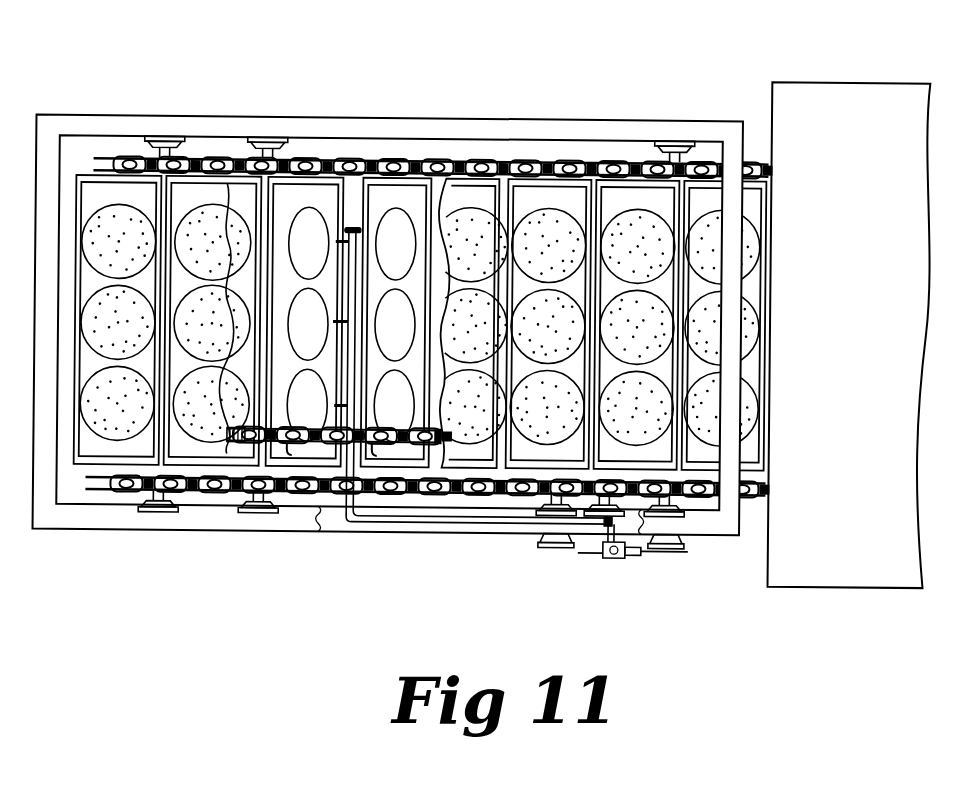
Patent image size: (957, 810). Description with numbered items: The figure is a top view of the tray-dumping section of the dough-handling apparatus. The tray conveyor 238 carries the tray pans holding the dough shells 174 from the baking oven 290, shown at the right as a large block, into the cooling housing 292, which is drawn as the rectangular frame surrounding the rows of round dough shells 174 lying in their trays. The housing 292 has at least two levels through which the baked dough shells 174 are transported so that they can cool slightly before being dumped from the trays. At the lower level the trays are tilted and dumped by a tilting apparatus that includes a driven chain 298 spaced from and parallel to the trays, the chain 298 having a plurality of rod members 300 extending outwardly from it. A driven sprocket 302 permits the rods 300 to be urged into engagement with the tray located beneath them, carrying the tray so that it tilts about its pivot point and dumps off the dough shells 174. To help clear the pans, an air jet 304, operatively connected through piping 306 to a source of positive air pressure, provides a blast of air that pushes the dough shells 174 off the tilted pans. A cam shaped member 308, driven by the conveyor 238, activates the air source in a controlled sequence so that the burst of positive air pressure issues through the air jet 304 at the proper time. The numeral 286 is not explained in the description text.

The dough shells 174 is at (656, 254).
The tray conveyor 238 is at (762, 165).
The tray 286 is at (487, 195).
The baking oven 290 is at (830, 80).
The cooling housing 292 is at (545, 130).
The driven chain 298 is at (415, 446).
The rod members 300 is at (289, 455).
The driven sprocket 302 is at (258, 447).
The air jet 304 is at (334, 322).
The piping 306 is at (356, 240).
The cam shaped member 308 is at (690, 552).